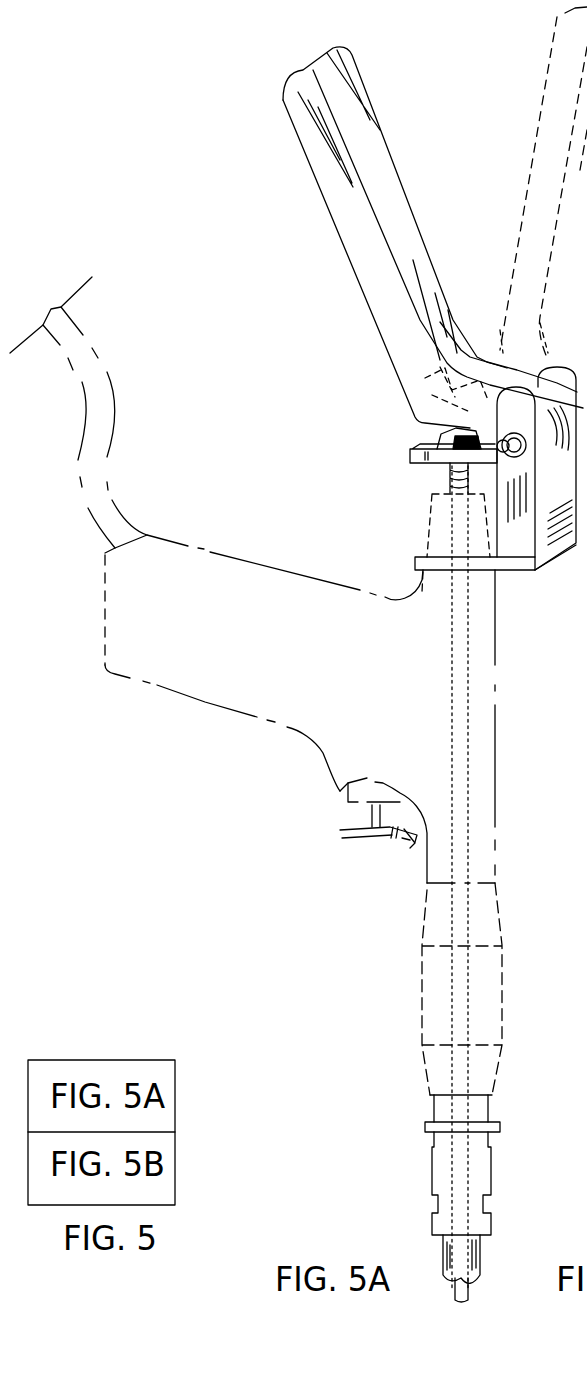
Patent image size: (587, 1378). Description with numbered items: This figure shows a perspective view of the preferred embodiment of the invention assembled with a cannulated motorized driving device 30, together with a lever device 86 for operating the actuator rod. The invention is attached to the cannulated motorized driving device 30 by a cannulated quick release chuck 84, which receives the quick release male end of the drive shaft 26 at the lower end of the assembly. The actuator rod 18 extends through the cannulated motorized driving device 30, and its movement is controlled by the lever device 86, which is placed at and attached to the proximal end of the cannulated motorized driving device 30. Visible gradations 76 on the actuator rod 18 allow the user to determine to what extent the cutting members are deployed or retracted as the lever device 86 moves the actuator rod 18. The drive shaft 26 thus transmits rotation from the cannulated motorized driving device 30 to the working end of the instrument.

The lever device 86 is at (300, 82).
The visible gradations 76 is at (440, 468).
The actuator rod 18 is at (440, 530).
The cannulated motorized driving device 30 is at (303, 815).
The cannulated quick release chuck 84 is at (440, 1170).
The drive shaft 26 is at (474, 1267).